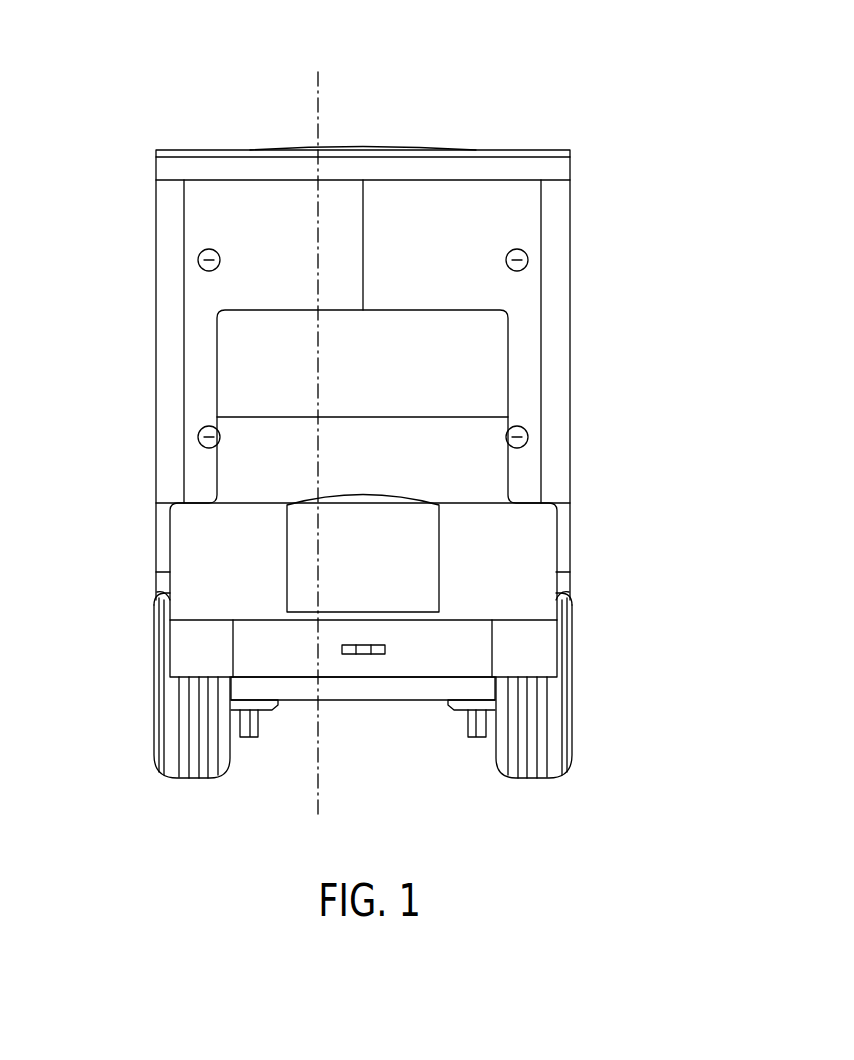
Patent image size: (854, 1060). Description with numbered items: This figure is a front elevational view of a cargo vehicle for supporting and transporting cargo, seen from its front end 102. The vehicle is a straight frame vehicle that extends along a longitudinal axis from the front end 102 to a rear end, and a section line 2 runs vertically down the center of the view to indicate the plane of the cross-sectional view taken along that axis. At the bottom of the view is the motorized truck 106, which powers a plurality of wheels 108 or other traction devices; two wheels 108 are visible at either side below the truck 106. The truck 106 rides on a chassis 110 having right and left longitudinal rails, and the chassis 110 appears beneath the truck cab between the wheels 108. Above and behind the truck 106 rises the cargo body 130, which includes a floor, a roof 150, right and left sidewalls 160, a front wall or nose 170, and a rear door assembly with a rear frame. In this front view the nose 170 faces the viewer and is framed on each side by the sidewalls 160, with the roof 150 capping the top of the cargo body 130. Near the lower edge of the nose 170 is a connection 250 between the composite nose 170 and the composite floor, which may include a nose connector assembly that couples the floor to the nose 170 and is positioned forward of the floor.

The section line 2 is at (276, 72).
The front end 102 is at (598, 357).
The motorized truck 106 is at (517, 553).
The wheels 108 is at (547, 748).
The chassis 110 is at (388, 735).
The cargo body 130 is at (518, 88).
The roof 150 is at (430, 110).
The sidewalls 160 is at (120, 297).
The nose 170 is at (270, 233).
The connection 250 is at (148, 575).